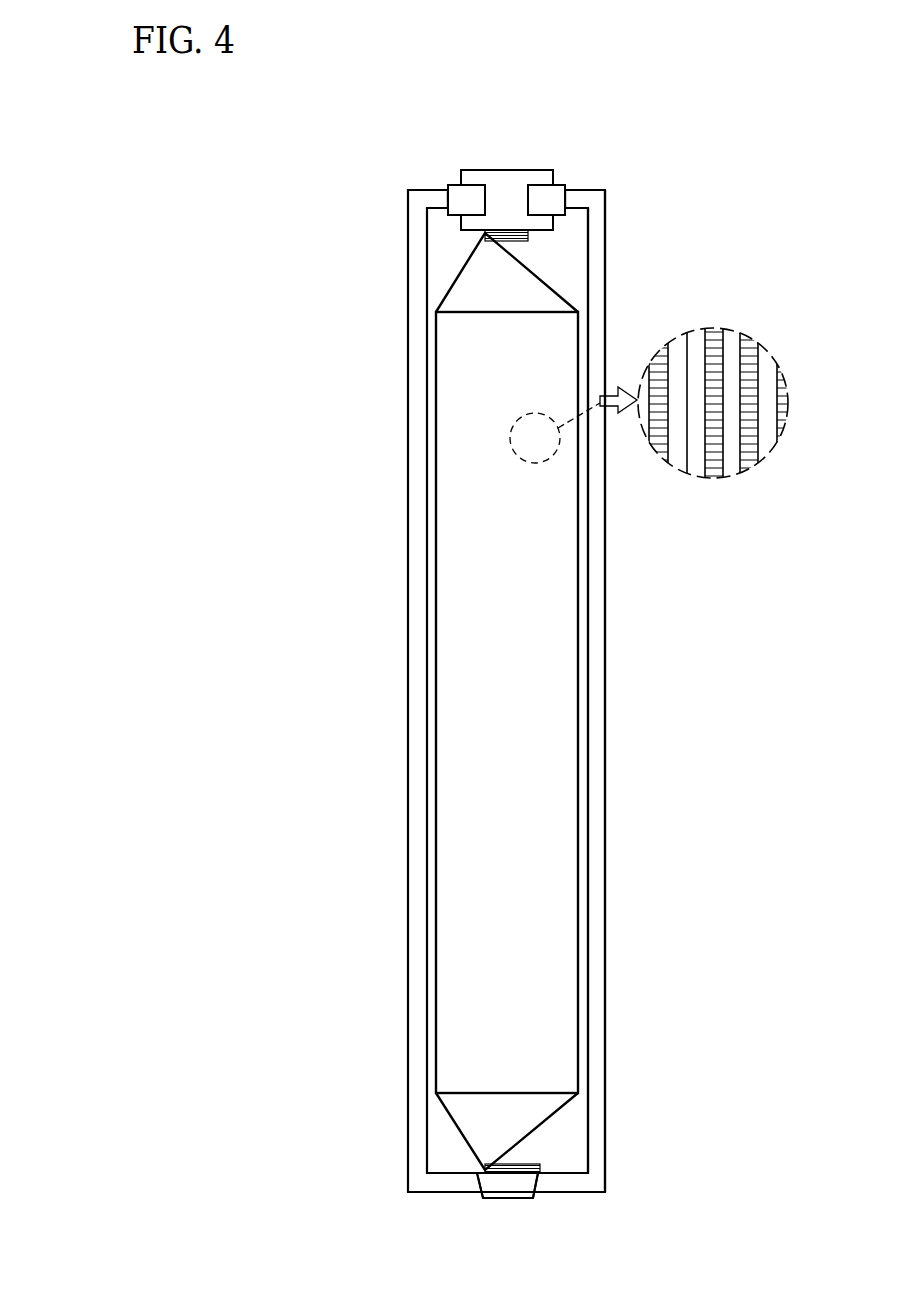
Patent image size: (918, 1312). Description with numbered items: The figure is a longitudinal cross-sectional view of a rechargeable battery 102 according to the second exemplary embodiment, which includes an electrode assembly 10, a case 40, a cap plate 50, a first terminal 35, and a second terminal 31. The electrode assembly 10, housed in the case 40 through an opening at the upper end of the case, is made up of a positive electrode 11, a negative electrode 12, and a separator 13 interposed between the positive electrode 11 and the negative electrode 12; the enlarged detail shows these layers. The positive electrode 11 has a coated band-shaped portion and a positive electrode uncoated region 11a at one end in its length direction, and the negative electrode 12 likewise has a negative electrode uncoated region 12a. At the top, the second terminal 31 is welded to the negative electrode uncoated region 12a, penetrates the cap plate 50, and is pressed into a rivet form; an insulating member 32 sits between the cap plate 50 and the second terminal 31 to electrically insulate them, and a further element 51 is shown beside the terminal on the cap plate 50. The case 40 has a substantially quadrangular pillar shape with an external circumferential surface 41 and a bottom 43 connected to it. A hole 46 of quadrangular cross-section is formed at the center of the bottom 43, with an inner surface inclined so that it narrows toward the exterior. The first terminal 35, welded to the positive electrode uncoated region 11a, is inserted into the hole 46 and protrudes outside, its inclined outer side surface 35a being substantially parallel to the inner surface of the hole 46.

The rechargeable battery 102 is at (402, 104).
The electrode assembly 10 is at (613, 701).
The positive electrode 11 is at (663, 453).
The negative electrode 12 is at (697, 467).
The separator 13 is at (715, 457).
The positive electrode uncoated region 11a is at (558, 1110).
The negative electrode uncoated region 12a is at (526, 279).
The second terminal 31 is at (494, 178).
The insulating member 32 is at (452, 186).
The first terminal 35 is at (500, 1188).
The outer side surface 35a is at (476, 1180).
The case 40 is at (614, 752).
The external circumferential surface 41 is at (596, 838).
The bottom 43 is at (578, 1183).
The hole 46 is at (532, 1192).
The cap plate 50 is at (581, 195).
The insulating gasket 51 is at (536, 196).